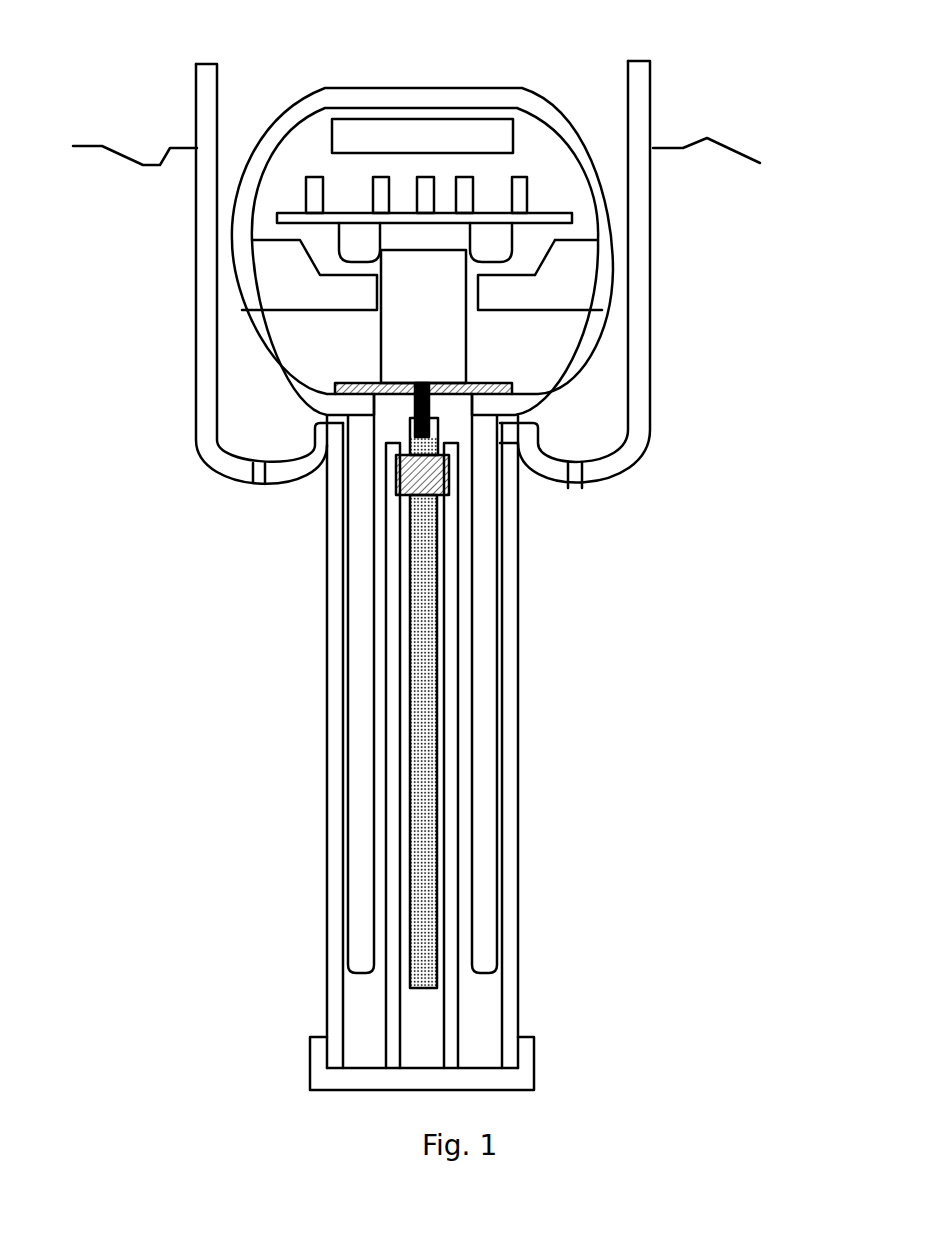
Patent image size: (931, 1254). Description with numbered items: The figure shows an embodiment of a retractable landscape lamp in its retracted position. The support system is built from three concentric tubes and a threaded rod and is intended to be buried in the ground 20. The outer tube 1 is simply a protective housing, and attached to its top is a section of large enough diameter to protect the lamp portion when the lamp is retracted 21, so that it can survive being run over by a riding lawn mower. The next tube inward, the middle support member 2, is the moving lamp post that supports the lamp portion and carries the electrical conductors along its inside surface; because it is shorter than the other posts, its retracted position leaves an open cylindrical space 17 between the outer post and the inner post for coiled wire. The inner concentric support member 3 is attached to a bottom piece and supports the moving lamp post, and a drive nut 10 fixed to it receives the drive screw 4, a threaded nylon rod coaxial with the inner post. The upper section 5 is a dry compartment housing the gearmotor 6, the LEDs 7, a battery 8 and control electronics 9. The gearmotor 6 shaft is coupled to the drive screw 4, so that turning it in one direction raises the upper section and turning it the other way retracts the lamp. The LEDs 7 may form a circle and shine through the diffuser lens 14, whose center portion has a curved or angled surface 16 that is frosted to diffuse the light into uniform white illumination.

The outer tube 1 is at (515, 805).
The middle support member 2 is at (367, 663).
The inner concentric support member 3 is at (395, 587).
The drive screw 4 is at (427, 545).
The upper section 5 is at (575, 123).
The gearmotor 6 is at (423, 316).
The LEDs 7 is at (425, 242).
The battery 8 is at (393, 133).
The control electronics 9 is at (538, 205).
The drive nut 10 is at (415, 482).
The diffuser lens 14 is at (277, 267).
The curved or angled surface 16 is at (542, 262).
The open cylindrical space 17 is at (370, 1020).
The ground 20 is at (120, 163).
The protective section 21 is at (205, 430).